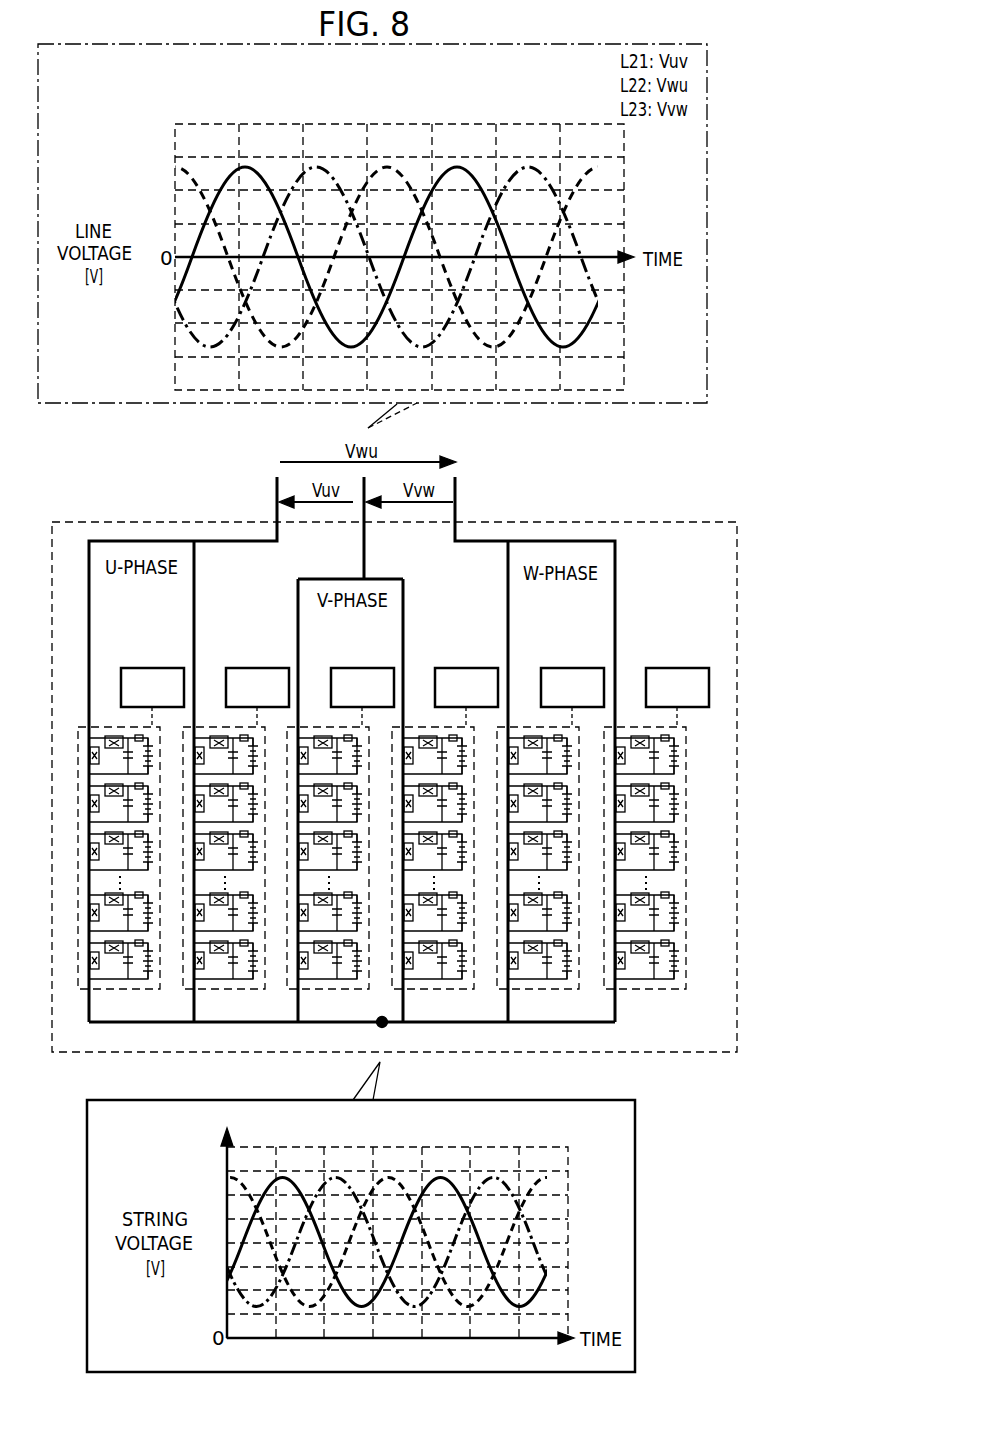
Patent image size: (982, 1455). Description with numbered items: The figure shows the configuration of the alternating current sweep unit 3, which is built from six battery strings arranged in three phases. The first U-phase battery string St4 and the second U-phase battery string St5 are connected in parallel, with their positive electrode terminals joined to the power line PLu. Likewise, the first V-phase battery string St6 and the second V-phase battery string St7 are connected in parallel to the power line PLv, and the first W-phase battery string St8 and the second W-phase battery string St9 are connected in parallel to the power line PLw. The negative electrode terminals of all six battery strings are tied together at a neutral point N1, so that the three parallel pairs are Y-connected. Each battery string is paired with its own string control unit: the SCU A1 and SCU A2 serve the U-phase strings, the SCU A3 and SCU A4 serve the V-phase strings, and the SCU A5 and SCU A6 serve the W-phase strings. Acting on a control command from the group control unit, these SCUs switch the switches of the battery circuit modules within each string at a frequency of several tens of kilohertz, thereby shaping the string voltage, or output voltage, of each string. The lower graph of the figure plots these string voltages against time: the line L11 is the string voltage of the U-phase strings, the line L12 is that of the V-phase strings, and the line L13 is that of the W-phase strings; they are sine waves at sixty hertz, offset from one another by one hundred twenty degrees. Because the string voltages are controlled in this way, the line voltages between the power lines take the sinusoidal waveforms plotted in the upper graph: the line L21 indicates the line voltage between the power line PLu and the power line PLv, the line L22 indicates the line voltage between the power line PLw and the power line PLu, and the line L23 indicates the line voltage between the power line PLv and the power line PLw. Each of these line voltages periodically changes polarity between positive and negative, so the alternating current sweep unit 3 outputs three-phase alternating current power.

The line L21 is at (243, 166).
The line L22 is at (316, 166).
The line L23 is at (387, 166).
The alternating current sweep unit 3 is at (624, 509).
The power line PLu is at (205, 543).
The power line PLv is at (366, 537).
The power line PLw is at (498, 543).
The SCU A1 is at (151, 668).
The SCU A2 is at (256, 668).
The SCU A3 is at (361, 668).
The SCU A4 is at (465, 668).
The SCU A5 is at (571, 668).
The SCU A6 is at (676, 668).
The first U-phase battery string St4 is at (111, 990).
The second U-phase battery string St5 is at (216, 990).
The first V-phase battery string St6 is at (320, 990).
The second V-phase battery string St7 is at (425, 990).
The first W-phase battery string St8 is at (530, 990).
The second W-phase battery string St9 is at (637, 990).
The neutral point N1 is at (388, 1027).
The line L11 is at (282, 1177).
The line L12 is at (335, 1177).
The line L13 is at (388, 1177).